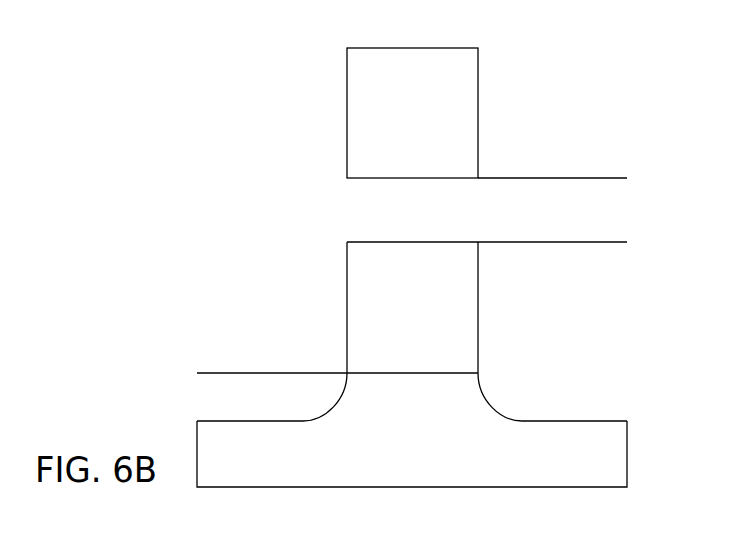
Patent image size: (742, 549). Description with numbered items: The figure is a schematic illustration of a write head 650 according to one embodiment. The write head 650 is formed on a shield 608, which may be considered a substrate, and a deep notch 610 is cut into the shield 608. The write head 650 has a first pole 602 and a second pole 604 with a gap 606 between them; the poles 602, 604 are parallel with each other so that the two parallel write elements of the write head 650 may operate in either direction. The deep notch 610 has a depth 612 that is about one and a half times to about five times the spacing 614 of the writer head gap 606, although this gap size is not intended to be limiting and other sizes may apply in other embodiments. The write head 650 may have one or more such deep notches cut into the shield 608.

The first pole 602 is at (432, 127).
The second pole 604 is at (432, 314).
The gap 606 is at (412, 214).
The shield 608 is at (432, 454).
The deep notch 610 is at (578, 389).
The depth 612 is at (272, 409).
The spacing 614 is at (595, 210).
The write head 650 is at (287, 236).